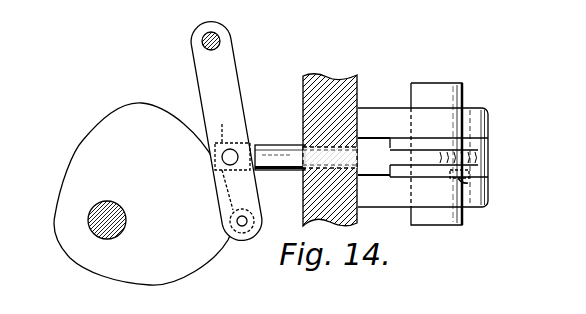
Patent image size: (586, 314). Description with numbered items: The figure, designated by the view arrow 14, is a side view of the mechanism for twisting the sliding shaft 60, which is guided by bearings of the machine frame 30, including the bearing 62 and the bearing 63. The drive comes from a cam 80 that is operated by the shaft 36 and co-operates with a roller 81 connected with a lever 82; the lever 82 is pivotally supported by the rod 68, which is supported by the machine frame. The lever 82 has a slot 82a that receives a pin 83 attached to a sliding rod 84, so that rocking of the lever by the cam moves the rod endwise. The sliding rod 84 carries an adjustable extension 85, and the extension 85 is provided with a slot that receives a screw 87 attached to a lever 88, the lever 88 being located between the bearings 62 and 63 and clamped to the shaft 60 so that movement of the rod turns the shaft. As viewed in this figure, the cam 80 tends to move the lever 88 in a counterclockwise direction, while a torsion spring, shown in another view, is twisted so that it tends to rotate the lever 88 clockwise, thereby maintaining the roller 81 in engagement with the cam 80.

The section view arrow 14 is at (180, 0).
The cam 80 is at (76, 158).
The shaft 36 is at (90, 230).
The lever 82 is at (240, 113).
The rod 68 is at (219, 40).
The sliding rod 84 is at (266, 171).
The slot 82a is at (230, 159).
The pin 83 is at (237, 153).
The roller 81 is at (244, 227).
The bearing 63 is at (486, 207).
The adjustable extension 85 is at (482, 158).
The sliding shaft 60 is at (464, 97).
The bearing 62 is at (489, 122).
The lever 88 is at (471, 176).
The screw 87 is at (468, 182).
The machine frame 30 is at (306, 203).